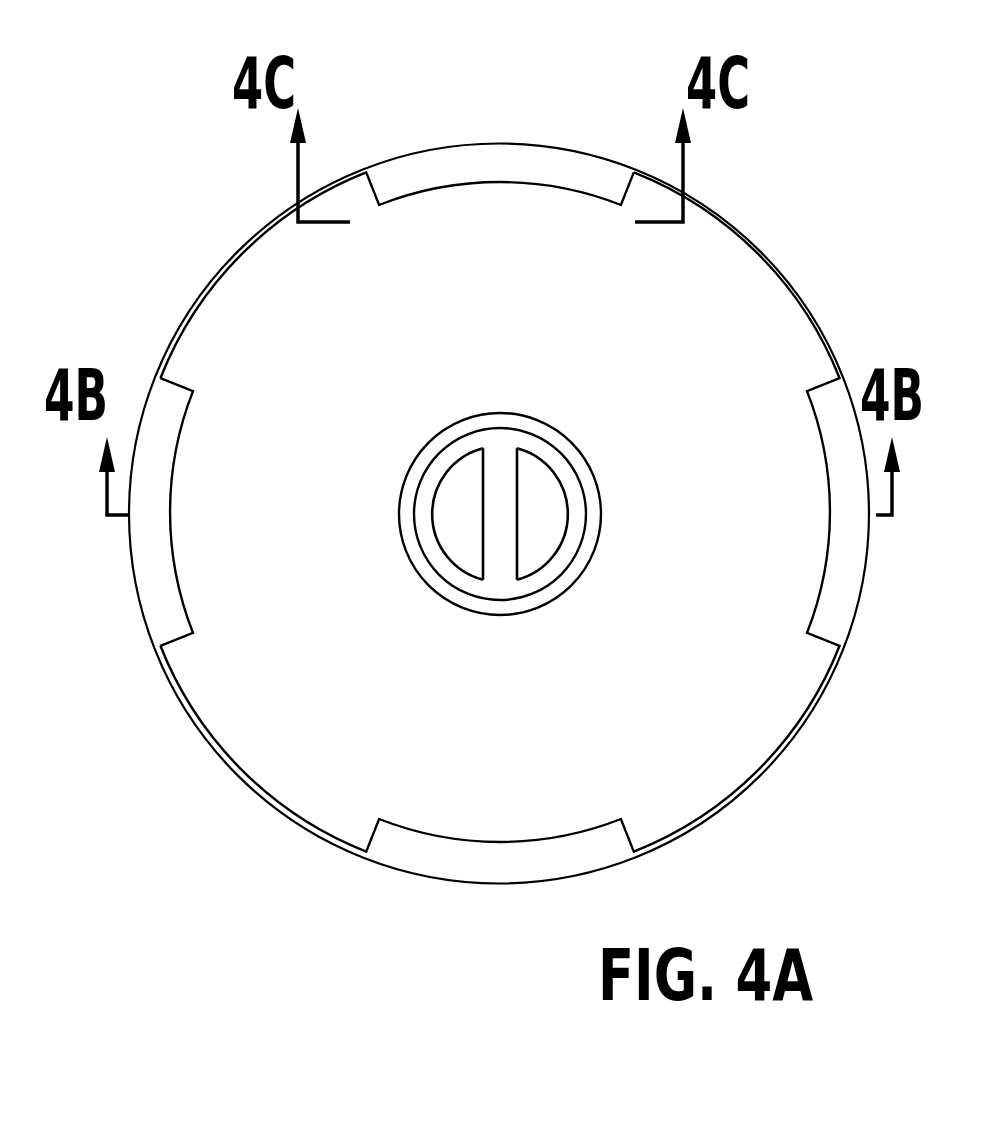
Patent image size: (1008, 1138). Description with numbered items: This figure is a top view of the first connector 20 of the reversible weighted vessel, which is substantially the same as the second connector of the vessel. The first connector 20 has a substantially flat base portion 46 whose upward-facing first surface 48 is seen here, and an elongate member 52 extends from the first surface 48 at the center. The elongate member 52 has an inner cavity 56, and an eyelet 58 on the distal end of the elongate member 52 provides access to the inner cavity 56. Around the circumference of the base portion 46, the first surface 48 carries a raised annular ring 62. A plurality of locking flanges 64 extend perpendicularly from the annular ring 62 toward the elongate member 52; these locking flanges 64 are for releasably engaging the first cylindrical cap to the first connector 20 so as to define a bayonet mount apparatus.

The first connector 20 is at (150, 70).
The base portion 46 is at (256, 807).
The first surface 48 is at (232, 325).
The elongate member 52 is at (408, 551).
The inner cavity 56 is at (537, 500).
The eyelet 58 is at (523, 534).
The raised annular ring 62 is at (758, 252).
The locking flanges 64 is at (158, 573).